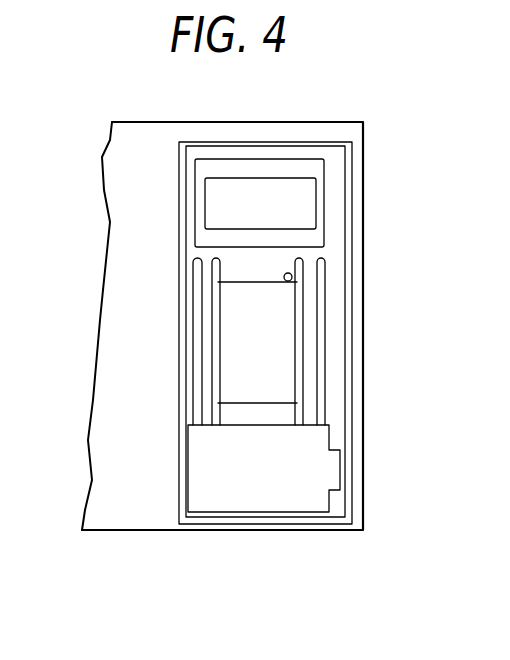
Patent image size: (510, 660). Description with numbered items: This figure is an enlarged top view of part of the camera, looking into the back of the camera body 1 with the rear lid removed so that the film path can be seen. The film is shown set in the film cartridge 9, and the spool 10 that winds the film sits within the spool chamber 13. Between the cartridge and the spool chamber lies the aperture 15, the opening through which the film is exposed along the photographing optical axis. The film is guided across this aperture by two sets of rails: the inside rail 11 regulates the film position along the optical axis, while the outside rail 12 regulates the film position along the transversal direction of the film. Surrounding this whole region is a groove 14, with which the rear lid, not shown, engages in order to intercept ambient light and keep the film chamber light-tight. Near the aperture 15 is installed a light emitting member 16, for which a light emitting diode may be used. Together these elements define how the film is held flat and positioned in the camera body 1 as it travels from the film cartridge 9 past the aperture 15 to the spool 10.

The camera body 1 is at (113, 120).
The film cartridge 9 is at (268, 503).
The spool 10 is at (233, 188).
The inside rail 11 is at (204, 268).
The outside rail 12 is at (197, 317).
The spool chamber 13 is at (282, 167).
The groove 14 is at (178, 468).
The aperture 15 is at (287, 357).
The light emitting member 16 is at (291, 273).